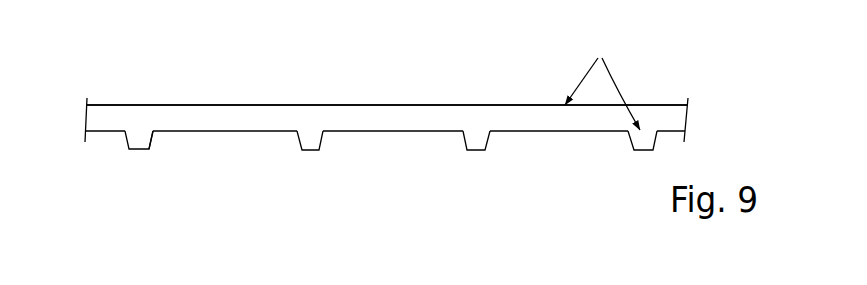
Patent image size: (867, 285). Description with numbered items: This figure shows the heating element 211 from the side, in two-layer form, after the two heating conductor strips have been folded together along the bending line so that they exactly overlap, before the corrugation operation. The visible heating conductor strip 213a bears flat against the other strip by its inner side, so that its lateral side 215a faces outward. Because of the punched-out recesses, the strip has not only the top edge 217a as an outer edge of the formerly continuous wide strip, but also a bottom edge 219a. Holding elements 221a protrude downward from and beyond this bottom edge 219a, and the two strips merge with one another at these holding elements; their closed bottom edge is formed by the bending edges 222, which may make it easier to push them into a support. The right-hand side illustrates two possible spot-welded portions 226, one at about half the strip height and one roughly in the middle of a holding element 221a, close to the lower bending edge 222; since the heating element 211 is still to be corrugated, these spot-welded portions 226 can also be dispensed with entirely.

The heating element 211 is at (128, 77).
The heating conductor strip 213a is at (269, 111).
The lateral side 215a is at (223, 118).
The top edge 217a is at (388, 105).
The bottom edge 219a is at (386, 131).
The holding element 221a is at (150, 138).
The bending edge 222 is at (140, 148).
The spot-welded portion 226 is at (602, 81).